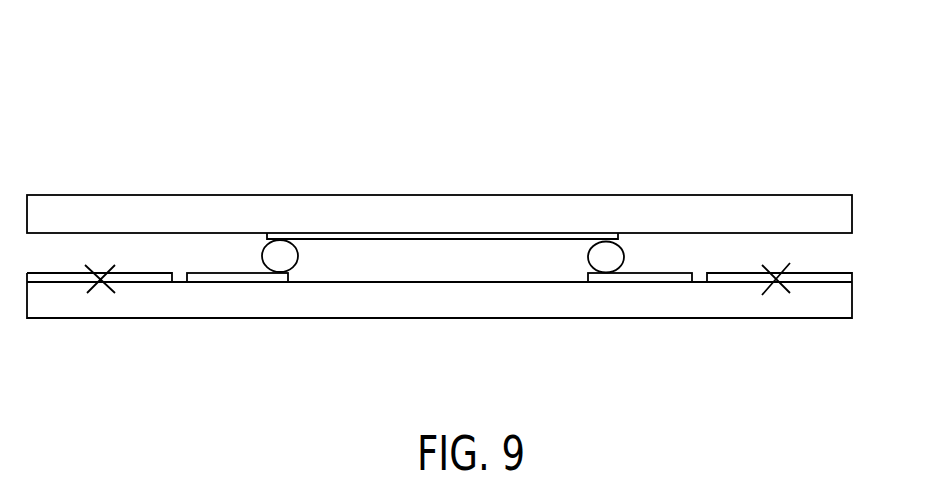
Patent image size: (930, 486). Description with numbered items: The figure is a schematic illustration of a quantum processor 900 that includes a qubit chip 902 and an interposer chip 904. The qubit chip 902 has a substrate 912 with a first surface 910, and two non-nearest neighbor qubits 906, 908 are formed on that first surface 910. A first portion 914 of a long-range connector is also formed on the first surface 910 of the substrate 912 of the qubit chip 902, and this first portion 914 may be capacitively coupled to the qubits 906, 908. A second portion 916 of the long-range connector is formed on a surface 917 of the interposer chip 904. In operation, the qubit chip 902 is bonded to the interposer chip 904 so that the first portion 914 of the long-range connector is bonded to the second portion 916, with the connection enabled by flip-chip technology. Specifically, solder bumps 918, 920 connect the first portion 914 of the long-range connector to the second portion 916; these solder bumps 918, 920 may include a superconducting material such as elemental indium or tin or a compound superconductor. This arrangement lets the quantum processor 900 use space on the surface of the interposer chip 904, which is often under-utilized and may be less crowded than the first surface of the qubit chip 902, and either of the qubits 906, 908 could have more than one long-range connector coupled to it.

The quantum processor 900 is at (744, 99).
The qubit chip 902 is at (376, 339).
The interposer chip 904 is at (369, 177).
The qubit 906 is at (100, 279).
The qubit 908 is at (775, 279).
The first surface 910 is at (498, 282).
The substrate 912 is at (852, 293).
The first portion of the long-range connector 914 is at (208, 273).
The second portion of the long-range connector 916 is at (447, 232).
The surface of the interposer chip 917 is at (788, 230).
The solder bump 918 is at (262, 256).
The solder bump 920 is at (624, 257).